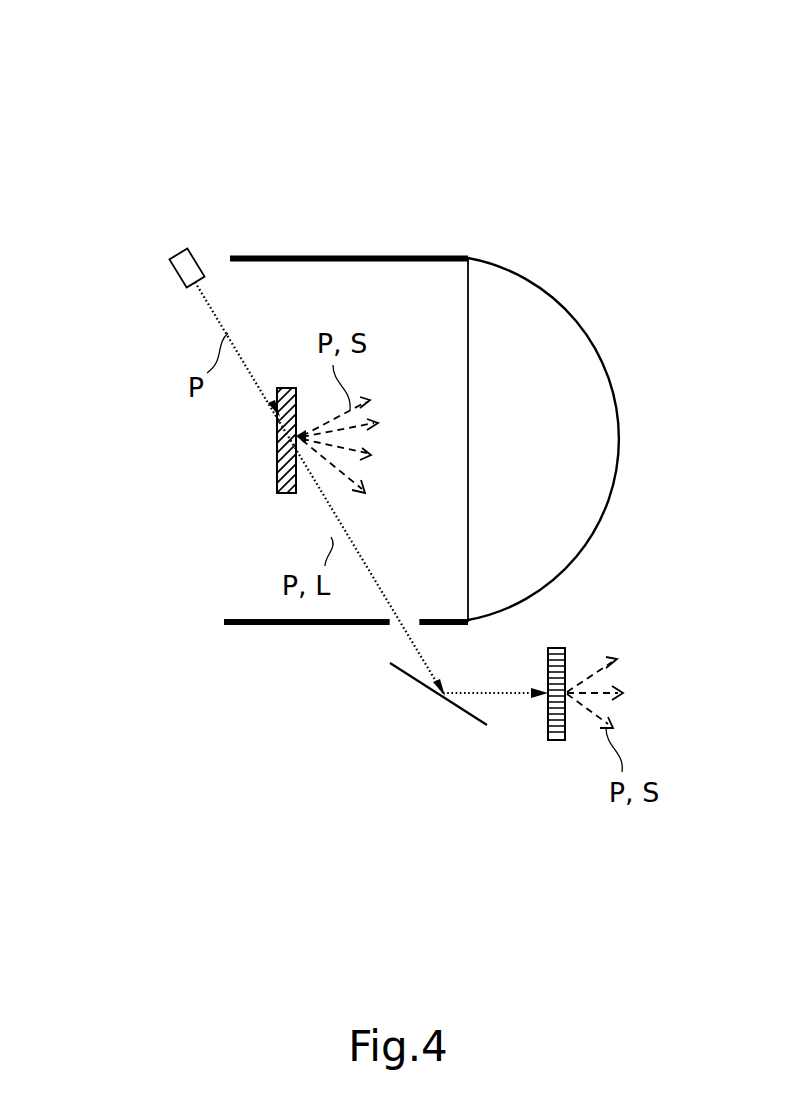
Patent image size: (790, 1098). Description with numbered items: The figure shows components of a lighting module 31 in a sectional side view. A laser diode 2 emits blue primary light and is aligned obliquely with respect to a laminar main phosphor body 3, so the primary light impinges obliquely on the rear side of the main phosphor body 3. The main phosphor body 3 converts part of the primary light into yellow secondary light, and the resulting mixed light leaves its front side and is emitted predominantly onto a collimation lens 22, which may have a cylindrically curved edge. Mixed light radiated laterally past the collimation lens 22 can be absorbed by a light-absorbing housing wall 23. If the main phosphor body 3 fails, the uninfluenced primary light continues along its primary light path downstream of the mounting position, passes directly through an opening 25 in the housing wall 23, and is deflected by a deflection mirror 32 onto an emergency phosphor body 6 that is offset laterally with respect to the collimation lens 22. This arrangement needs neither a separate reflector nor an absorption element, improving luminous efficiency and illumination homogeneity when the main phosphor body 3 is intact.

The lighting module 31 is at (170, 112).
The light-absorbing housing wall 23 is at (360, 256).
The collimation lens 22 is at (540, 277).
The laser diode 2 is at (176, 279).
The main phosphor body 3 is at (288, 388).
The opening 25 is at (410, 620).
The deflection mirror 32 is at (410, 678).
The emergency phosphor body 6 is at (557, 742).